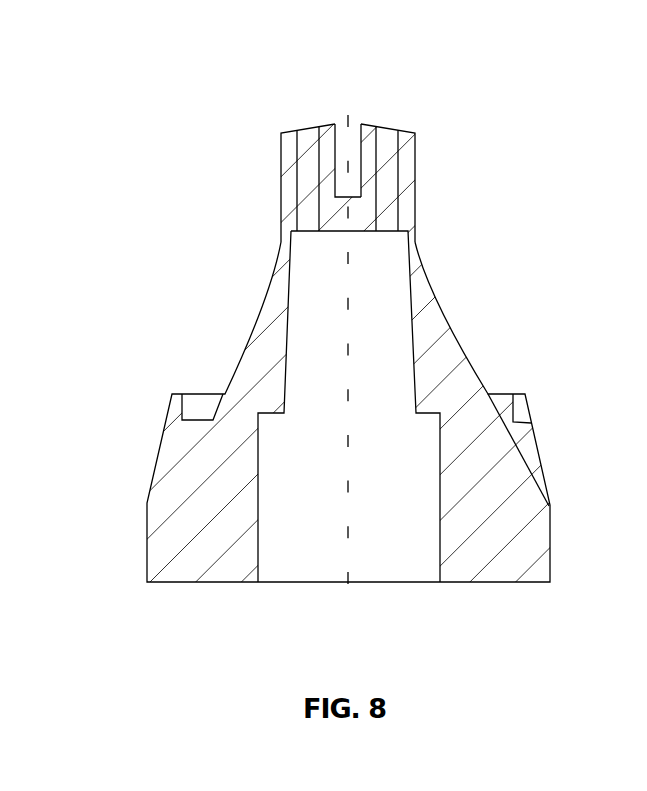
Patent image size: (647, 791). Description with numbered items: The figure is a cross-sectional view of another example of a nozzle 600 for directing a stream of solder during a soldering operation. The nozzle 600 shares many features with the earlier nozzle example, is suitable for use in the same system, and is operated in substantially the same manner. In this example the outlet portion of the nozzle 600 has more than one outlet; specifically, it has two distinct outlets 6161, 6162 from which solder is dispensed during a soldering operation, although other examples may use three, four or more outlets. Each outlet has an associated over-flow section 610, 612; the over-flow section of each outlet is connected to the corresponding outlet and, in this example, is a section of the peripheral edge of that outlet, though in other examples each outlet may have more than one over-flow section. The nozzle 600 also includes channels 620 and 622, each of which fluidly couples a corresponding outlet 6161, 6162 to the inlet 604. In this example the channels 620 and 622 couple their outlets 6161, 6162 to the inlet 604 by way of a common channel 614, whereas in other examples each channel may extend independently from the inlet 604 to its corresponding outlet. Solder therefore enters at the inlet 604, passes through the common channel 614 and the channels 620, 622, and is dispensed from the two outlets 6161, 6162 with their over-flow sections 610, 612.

The nozzle 600 is at (323, 364).
The inlet 604 is at (261, 615).
The over-flow section 610 is at (289, 131).
The over-flow section 612 is at (412, 130).
The common channel 614 is at (385, 312).
The outlet 6161 is at (309, 97).
The outlet 6162 is at (398, 103).
The channel 620 is at (308, 188).
The channel 622 is at (400, 200).